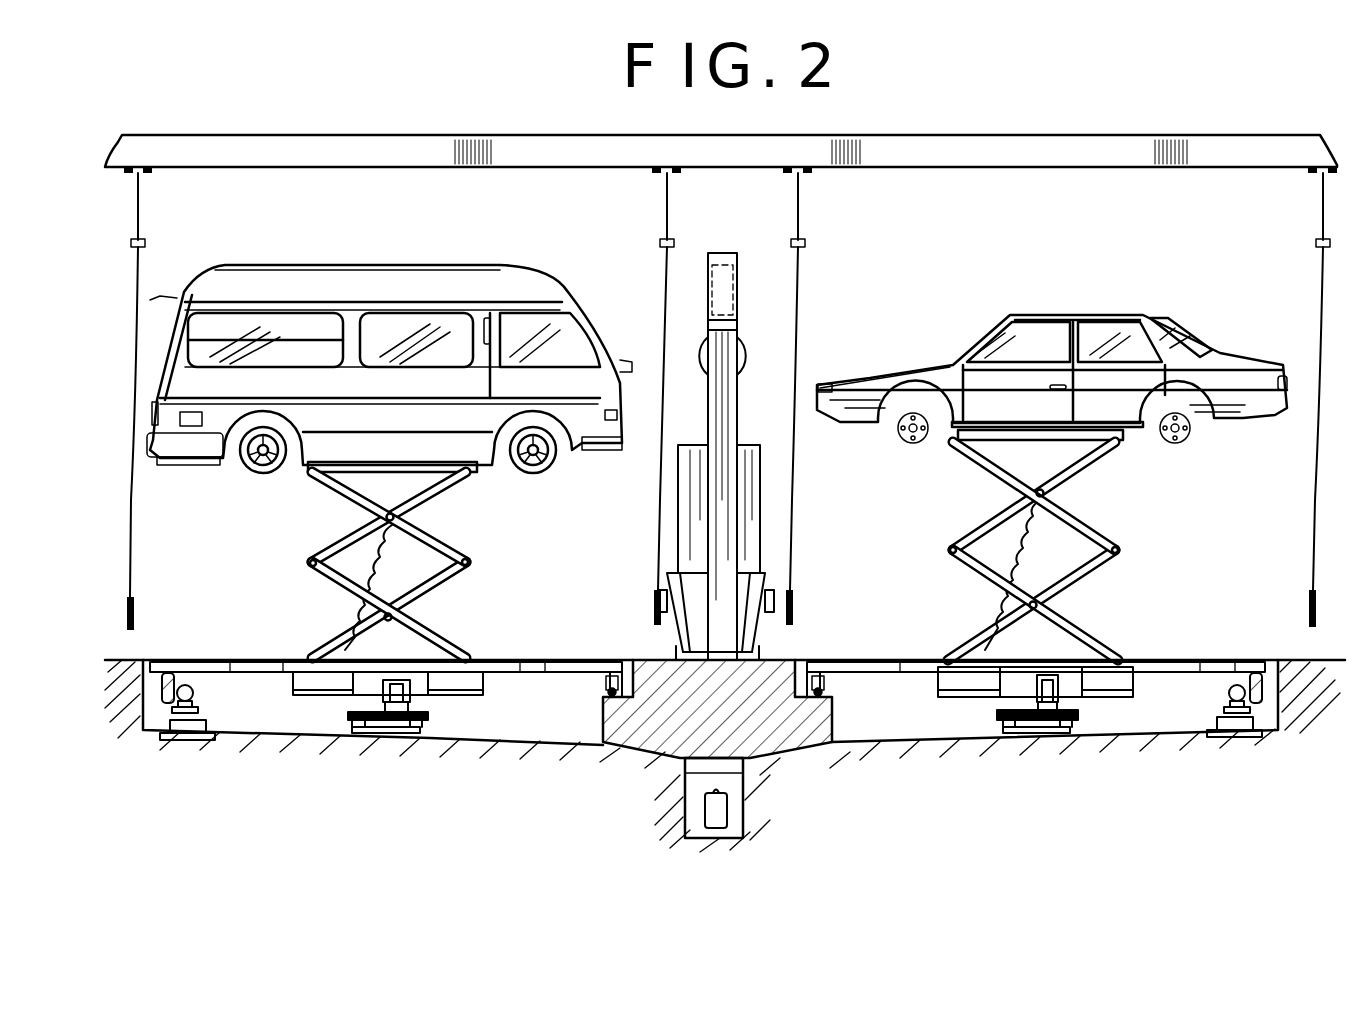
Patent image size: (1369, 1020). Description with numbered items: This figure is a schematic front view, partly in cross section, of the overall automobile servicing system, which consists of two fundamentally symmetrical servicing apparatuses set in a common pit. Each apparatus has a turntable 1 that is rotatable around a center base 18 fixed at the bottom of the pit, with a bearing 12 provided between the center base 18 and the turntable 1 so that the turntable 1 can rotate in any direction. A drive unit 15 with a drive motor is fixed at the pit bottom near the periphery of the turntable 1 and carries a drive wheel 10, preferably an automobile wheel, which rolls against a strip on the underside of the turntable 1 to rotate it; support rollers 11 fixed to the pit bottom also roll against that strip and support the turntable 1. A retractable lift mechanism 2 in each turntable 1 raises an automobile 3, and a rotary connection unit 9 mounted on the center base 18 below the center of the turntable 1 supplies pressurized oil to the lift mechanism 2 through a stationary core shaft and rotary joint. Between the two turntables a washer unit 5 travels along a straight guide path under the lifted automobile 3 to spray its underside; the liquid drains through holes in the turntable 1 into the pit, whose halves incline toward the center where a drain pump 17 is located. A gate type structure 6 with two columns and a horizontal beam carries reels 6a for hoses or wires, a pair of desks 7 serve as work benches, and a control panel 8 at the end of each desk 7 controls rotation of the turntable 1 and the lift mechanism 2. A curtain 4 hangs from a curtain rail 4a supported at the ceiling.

The turntable 1 is at (270, 680).
The lift mechanism 2 is at (440, 535).
The automobile 3 is at (512, 295).
The curtain 4 is at (133, 555).
The curtain rail 4a is at (146, 243).
The washer unit 5 is at (764, 644).
The gate type structure 6 is at (738, 403).
The reel 6a is at (745, 352).
The desk 7 is at (760, 580).
The control panel 8 is at (756, 473).
The rotary connection unit 9 is at (383, 690).
The drive wheel 10 is at (160, 710).
The support roller 11 is at (604, 690).
The bearing 12 is at (430, 716).
The drive unit 15 is at (193, 693).
The drain pump 17 is at (729, 810).
The center base 18 is at (388, 733).